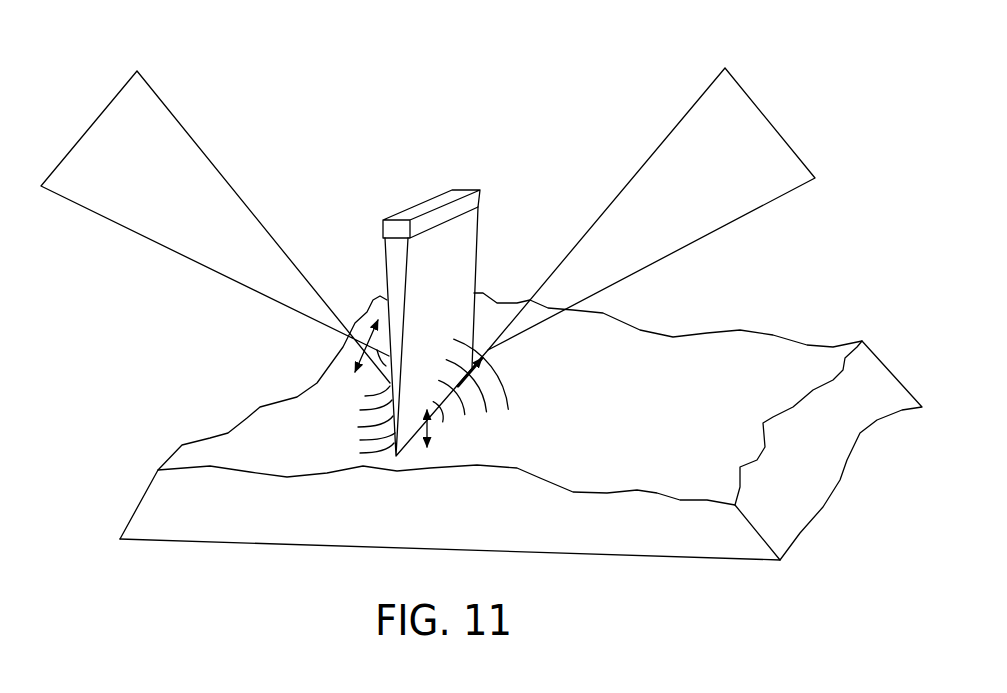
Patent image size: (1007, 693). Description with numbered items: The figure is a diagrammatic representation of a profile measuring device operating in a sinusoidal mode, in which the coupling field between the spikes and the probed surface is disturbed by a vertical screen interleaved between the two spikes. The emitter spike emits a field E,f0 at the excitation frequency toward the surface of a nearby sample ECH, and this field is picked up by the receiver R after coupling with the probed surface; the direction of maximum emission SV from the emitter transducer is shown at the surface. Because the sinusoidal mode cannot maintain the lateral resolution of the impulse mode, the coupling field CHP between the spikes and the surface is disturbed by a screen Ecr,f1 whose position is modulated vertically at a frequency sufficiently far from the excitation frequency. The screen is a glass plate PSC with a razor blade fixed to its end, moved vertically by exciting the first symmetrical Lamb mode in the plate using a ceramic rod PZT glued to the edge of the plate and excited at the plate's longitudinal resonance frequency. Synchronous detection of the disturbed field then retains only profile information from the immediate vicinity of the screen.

The emitter field at excitation frequency f0 E,f0 is at (137, 72).
The receiver R is at (725, 69).
The screen modulated at frequency f1 Ecr,f1 is at (413, 166).
The ceramic rod PZT is at (476, 199).
The glass plate PSC is at (463, 273).
The direction of maximum emission SV is at (362, 321).
The coupling field CHP is at (352, 401).
The sample ECH is at (521, 426).